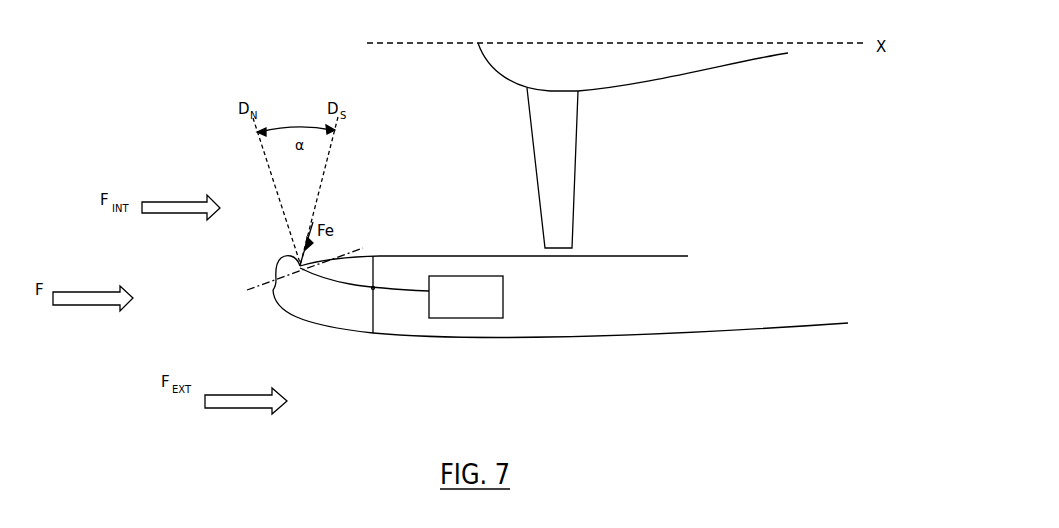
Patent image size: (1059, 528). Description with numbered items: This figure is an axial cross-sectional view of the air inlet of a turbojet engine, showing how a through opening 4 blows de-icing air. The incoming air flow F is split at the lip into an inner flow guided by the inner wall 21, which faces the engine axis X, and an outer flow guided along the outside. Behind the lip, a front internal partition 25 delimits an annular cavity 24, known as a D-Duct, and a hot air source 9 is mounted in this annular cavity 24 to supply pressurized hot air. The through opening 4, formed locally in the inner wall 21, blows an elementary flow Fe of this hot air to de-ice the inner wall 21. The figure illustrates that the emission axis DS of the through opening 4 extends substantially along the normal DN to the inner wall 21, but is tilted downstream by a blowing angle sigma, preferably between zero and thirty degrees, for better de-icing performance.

The through opening 4 is at (293, 252).
The hot air source 9 is at (466, 297).
The inner wall 21 is at (453, 255).
The annular cavity 24 is at (340, 316).
The front internal partition 25 is at (373, 290).